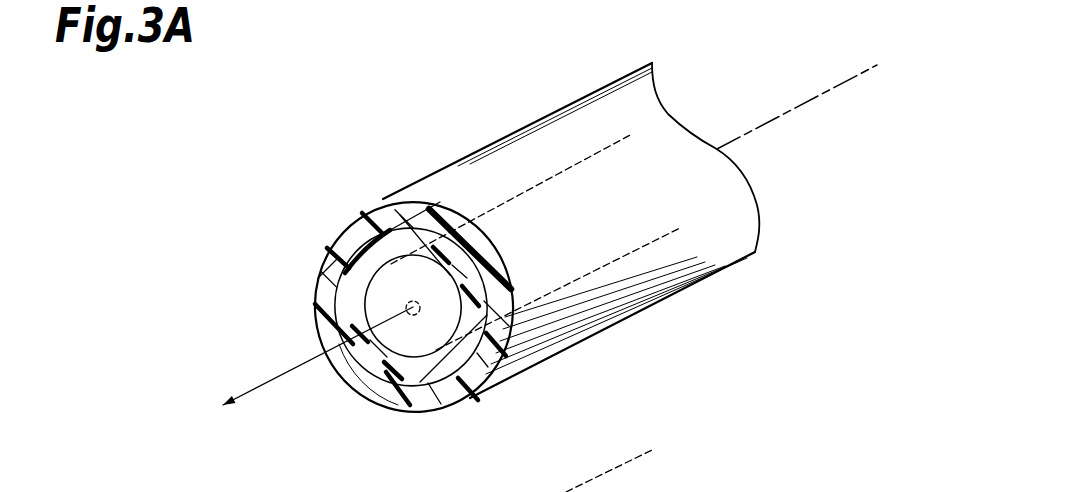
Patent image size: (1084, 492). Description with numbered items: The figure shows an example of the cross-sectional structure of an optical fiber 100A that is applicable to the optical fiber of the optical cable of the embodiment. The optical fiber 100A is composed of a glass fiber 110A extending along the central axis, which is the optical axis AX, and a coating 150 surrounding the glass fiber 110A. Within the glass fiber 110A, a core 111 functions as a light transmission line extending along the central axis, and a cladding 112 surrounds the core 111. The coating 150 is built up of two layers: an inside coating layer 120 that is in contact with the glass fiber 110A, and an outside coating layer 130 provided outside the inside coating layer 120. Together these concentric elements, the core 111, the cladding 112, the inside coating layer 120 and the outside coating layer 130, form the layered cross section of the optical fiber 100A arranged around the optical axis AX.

The optical fiber 100A is at (568, 106).
The coating 150 is at (418, 121).
The outside coating layer 130 is at (391, 215).
The inside coating layer 120 is at (380, 252).
The glass fiber 110A is at (382, 280).
The cladding 112 is at (400, 304).
The core 111 is at (412, 315).
The optical axis AX is at (530, 244).